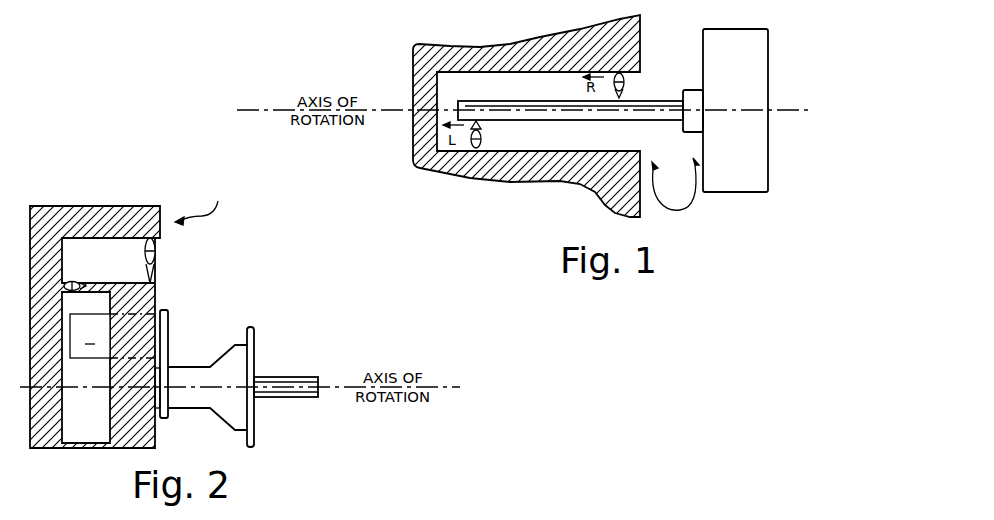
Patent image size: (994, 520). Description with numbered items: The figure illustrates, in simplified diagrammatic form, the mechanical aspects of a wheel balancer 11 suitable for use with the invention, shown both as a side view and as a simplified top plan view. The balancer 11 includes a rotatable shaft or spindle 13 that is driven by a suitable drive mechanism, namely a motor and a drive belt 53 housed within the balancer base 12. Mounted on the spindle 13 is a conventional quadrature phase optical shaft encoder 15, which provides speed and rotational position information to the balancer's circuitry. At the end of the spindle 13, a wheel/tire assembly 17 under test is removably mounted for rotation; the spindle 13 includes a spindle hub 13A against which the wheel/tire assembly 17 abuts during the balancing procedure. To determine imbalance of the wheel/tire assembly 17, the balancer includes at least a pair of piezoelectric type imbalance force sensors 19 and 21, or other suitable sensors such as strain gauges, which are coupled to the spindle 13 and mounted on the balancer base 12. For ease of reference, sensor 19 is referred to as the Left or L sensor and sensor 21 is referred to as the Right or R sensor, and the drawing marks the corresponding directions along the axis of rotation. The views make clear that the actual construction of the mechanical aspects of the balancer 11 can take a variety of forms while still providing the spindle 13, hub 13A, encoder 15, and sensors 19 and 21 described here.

In FIG. 1, the wheel balancer 11 is at (675, 199).
In FIG. 2, the wheel balancer 11 is at (202, 202).
In FIG. 1, the balancer base 12 is at (526, 116).
In FIG. 2, the balancer base 12 is at (73, 450).
In FIG. 1, the spindle 13 is at (665, 122).
In FIG. 2, the spindle 13 is at (288, 376).
In FIG. 2, the spindle hub 13A is at (255, 422).
In FIG. 1, the optical shaft encoder 15 is at (693, 90).
In FIG. 2, the optical shaft encoder 15 is at (146, 390).
In FIG. 1, the wheel/tire assembly 17 is at (768, 148).
In FIG. 1, the imbalance force sensor 19 is at (482, 137).
In FIG. 2, the imbalance force sensor 19 is at (76, 281).
In FIG. 1, the imbalance force sensor 21 is at (624, 87).
In FIG. 2, the imbalance force sensor 21 is at (157, 250).
In FIG. 2, the drive belt 53 is at (172, 333).